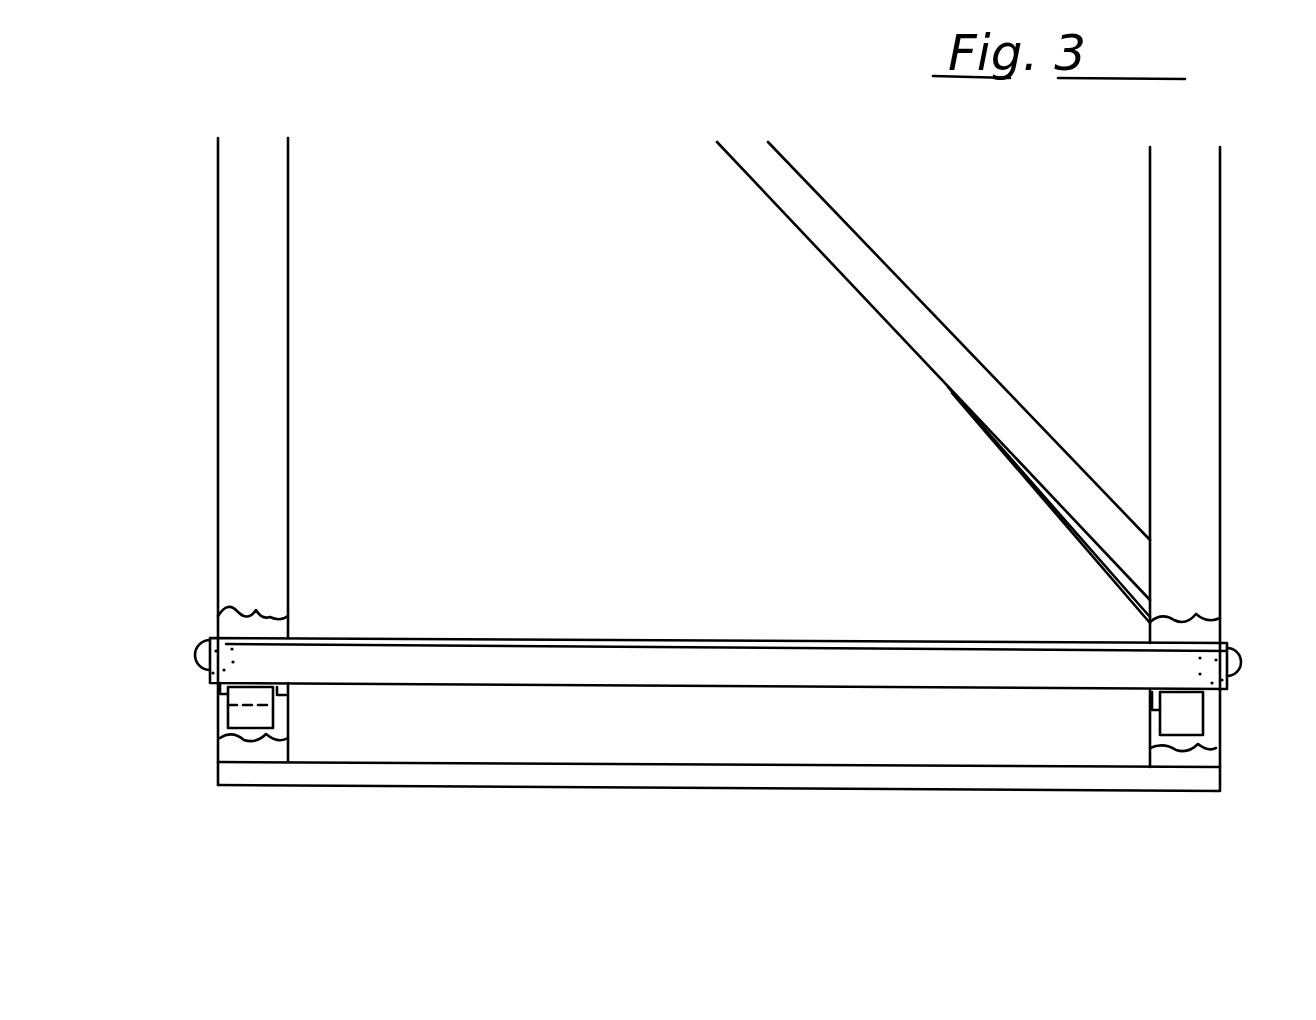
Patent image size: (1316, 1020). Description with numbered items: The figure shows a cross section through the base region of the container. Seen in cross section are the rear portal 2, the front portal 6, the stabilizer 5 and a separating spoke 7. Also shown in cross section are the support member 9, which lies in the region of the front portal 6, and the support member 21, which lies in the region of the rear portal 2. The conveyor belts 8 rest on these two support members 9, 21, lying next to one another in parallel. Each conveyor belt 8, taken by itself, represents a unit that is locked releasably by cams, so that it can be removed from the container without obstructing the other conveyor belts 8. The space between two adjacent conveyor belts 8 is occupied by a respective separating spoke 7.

The rear portal 2 is at (265, 423).
The stabilizer 5 is at (878, 275).
The front portal 6 is at (1177, 228).
The separating spoke 7 is at (998, 450).
The conveyor belt 8 is at (813, 663).
The support member 9 is at (1203, 713).
The support member 21 is at (238, 715).